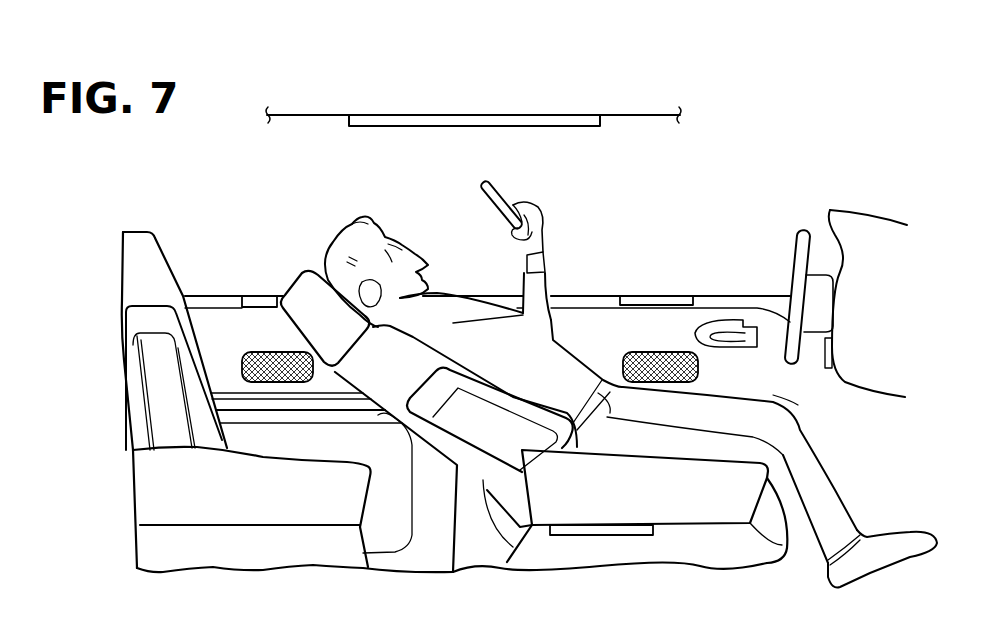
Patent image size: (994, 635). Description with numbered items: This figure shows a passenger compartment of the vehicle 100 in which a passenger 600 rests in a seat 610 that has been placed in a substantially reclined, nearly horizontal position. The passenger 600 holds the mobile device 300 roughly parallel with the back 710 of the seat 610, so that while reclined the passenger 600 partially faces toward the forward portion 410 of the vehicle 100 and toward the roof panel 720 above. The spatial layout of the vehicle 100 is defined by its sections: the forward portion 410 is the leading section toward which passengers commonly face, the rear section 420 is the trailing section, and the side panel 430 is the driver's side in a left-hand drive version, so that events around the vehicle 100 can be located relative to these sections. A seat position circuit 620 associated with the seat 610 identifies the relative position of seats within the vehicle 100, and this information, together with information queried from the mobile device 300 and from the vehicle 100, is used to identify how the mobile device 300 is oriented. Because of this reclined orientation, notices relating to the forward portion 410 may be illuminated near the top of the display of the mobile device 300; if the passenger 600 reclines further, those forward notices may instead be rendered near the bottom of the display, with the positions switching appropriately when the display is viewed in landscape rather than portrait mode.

The vehicle 100 is at (354, 94).
The roof panel 720 is at (536, 115).
The mobile device 300 is at (502, 190).
The forward portion 410 is at (830, 210).
The rear section 420 is at (123, 262).
The side panel 430 is at (648, 297).
The back 710 is at (378, 415).
The seat 610 is at (687, 508).
The seat position circuit 620 is at (603, 535).
The passenger 600 is at (858, 565).